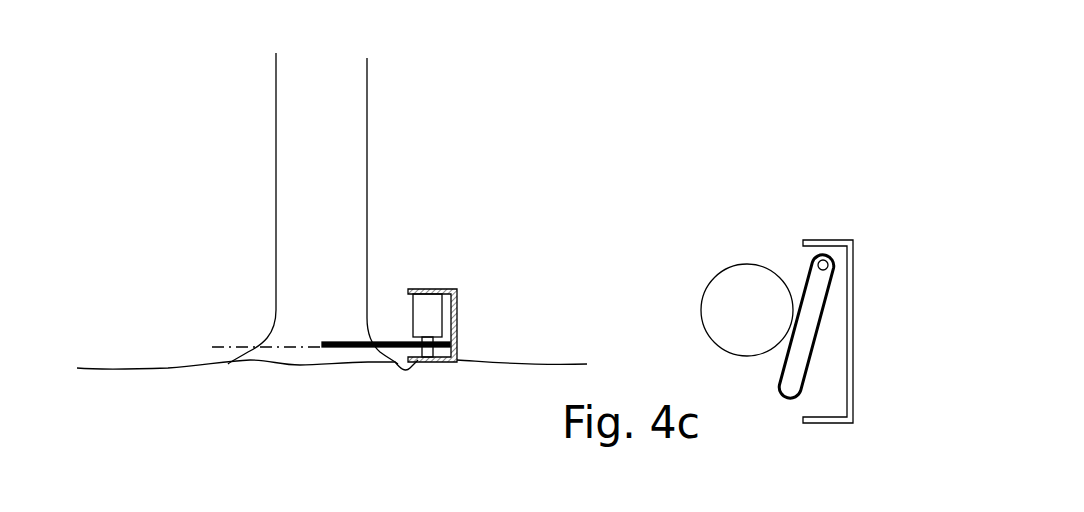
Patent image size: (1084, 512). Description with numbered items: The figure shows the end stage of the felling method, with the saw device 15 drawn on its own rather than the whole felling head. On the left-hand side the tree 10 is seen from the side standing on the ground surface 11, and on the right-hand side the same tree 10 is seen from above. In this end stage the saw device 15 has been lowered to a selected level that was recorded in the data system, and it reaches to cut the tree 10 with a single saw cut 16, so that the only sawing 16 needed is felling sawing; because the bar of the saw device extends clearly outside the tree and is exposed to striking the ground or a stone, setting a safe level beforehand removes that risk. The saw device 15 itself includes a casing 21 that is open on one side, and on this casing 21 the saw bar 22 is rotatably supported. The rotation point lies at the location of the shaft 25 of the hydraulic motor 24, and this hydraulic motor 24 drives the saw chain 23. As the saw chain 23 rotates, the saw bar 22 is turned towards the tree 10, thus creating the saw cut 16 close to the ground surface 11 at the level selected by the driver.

The tree 10 is at (345, 132).
The ground surface 11 is at (168, 368).
The saw device 15 is at (478, 288).
The saw cut 16 is at (347, 297).
The casing 21 is at (456, 316).
The saw bar 22 is at (810, 330).
The saw chain 23 is at (387, 346).
The hydraulic motor 24 is at (428, 300).
The shaft 25 is at (432, 352).